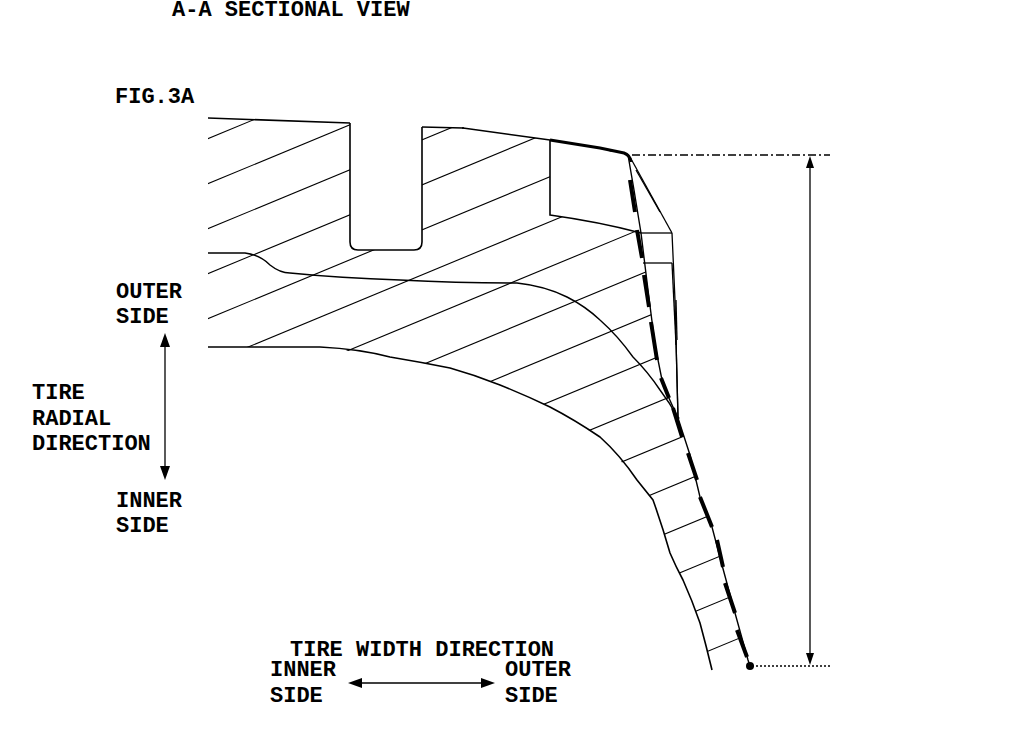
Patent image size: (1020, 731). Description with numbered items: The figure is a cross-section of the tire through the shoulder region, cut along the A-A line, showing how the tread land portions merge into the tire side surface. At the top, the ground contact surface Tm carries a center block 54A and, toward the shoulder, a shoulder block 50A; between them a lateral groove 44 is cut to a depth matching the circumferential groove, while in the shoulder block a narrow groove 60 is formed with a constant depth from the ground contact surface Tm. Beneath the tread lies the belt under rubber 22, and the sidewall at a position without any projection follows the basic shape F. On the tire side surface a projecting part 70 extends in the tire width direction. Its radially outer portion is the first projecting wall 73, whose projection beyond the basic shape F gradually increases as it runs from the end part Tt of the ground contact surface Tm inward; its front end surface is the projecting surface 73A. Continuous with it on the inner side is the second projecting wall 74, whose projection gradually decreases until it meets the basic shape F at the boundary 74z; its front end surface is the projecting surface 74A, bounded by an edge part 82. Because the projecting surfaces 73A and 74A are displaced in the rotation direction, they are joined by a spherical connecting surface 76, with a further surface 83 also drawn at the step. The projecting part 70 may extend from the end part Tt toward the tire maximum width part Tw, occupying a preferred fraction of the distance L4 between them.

The center block 54A is at (309, 147).
The shoulder block 50A is at (500, 165).
The lateral groove 44 is at (385, 136).
The narrow groove 60 is at (593, 153).
The belt under rubber 22 is at (565, 375).
The projecting part 70 is at (684, 339).
The first projecting wall 73 is at (652, 212).
The projecting surface of the first projecting wall 73A is at (646, 215).
The upper surface of protrusion 83 is at (674, 233).
The connecting surface 76 is at (662, 249).
The edge part 82 is at (678, 293).
The projecting surface of the second projecting wall 74A is at (663, 309).
The second projecting wall 74 is at (678, 326).
The boundary 74z is at (682, 418).
The basic shape F is at (698, 463).
The ground contact surface Tm is at (461, 115).
The end part of the ground contact surface Tt is at (629, 154).
The tire maximum width part Tw is at (753, 663).
The distance from the end part of the ground contact surface to the tire maximum wid L4 is at (731, 410).